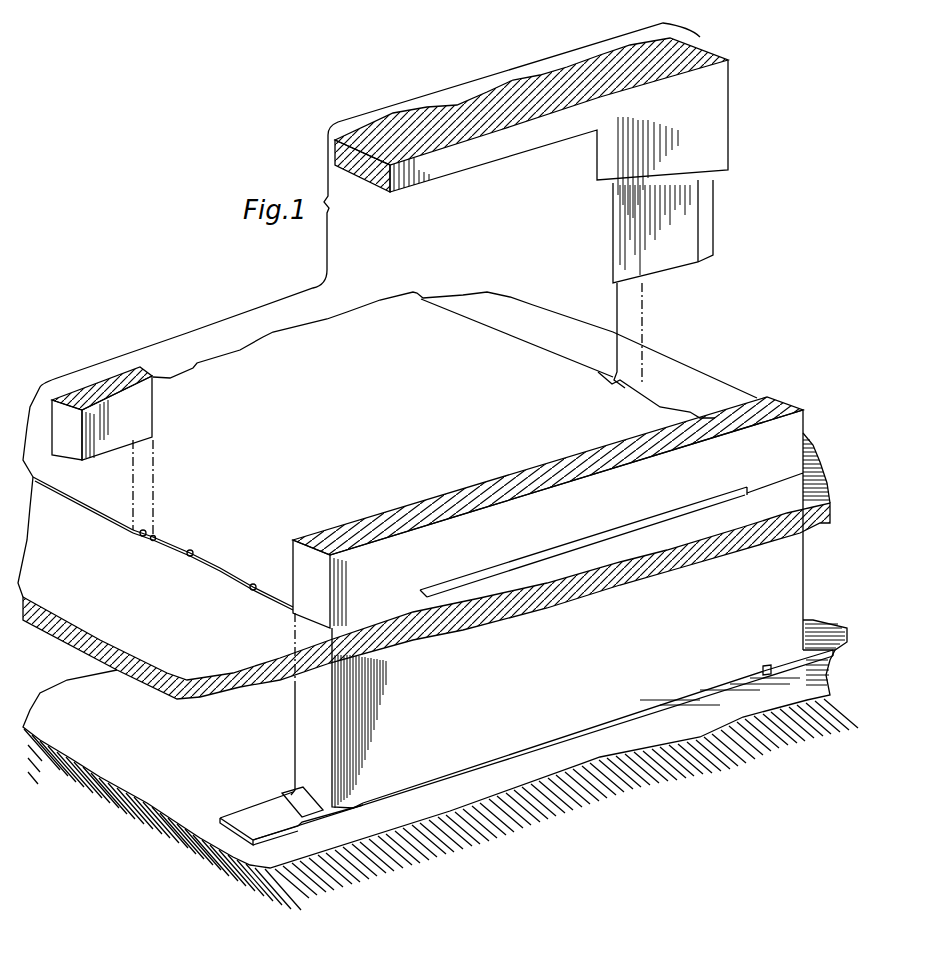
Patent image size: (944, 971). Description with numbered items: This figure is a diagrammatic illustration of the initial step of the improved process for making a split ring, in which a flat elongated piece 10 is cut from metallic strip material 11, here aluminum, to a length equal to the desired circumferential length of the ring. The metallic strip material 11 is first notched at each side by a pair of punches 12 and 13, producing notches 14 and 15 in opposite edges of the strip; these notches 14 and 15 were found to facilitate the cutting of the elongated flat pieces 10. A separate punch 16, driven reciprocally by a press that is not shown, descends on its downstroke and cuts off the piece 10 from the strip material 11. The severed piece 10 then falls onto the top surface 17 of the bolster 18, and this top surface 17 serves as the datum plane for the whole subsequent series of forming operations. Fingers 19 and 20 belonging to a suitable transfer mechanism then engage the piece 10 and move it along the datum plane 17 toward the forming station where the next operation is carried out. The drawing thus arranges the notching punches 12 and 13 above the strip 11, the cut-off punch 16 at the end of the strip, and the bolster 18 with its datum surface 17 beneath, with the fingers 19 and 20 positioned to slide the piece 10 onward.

The flat elongated piece 10 is at (633, 410).
The metallic strip material 11 is at (385, 308).
The punch 12 is at (92, 421).
The punch 13 is at (690, 226).
The notch 14 is at (662, 406).
The notch 15 is at (253, 587).
The punch 16 is at (790, 402).
The top surface 17 is at (145, 768).
The bolster 18 is at (178, 862).
The finger 19 is at (302, 818).
The finger 20 is at (93, 603).